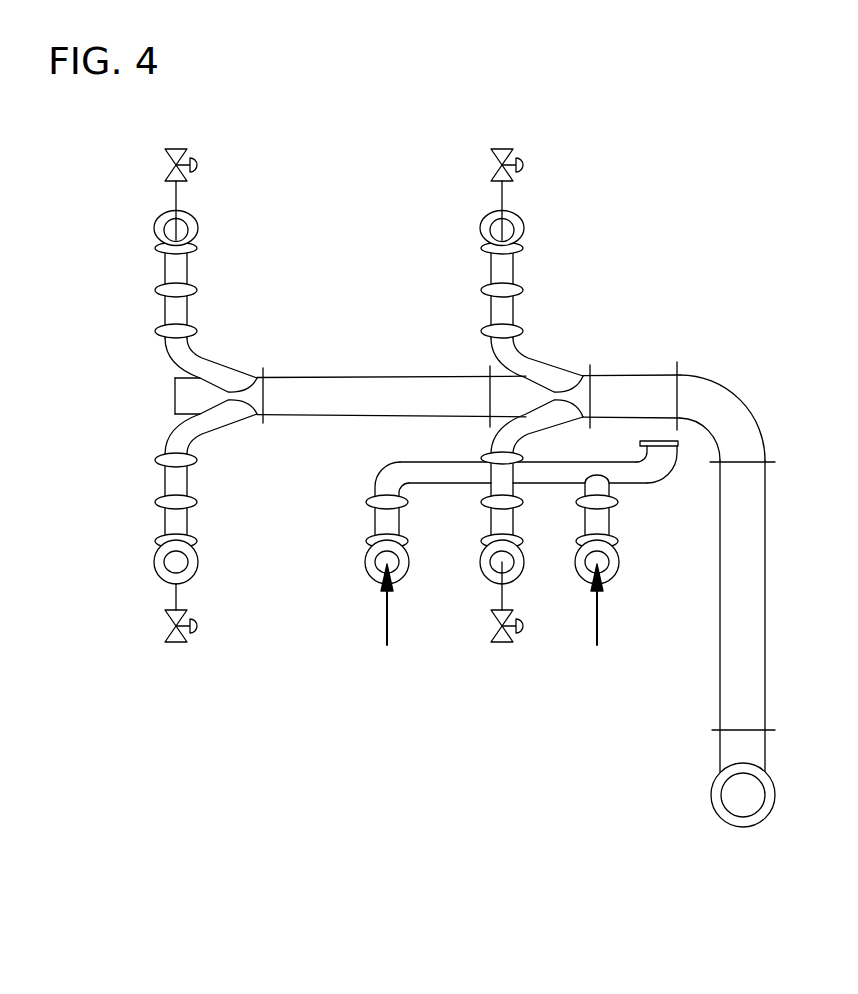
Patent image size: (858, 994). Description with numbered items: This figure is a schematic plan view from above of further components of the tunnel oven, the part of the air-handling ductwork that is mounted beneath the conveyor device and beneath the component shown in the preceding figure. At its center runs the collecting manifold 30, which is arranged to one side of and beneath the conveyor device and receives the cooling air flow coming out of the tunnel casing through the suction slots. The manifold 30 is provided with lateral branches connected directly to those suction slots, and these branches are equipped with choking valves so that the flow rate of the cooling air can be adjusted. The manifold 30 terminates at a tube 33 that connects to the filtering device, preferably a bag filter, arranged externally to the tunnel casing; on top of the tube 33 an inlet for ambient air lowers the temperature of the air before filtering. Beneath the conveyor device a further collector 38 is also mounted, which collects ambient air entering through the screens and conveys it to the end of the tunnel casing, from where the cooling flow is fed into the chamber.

The collecting manifold 30 is at (582, 361).
The tube 33 is at (757, 599).
The collector 38 is at (423, 462).